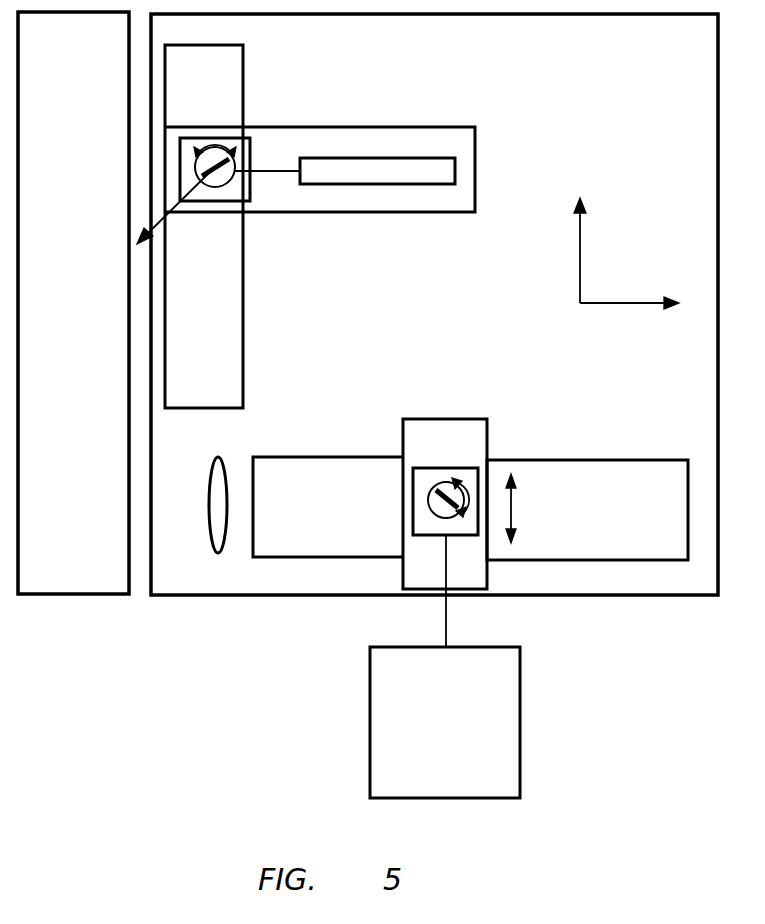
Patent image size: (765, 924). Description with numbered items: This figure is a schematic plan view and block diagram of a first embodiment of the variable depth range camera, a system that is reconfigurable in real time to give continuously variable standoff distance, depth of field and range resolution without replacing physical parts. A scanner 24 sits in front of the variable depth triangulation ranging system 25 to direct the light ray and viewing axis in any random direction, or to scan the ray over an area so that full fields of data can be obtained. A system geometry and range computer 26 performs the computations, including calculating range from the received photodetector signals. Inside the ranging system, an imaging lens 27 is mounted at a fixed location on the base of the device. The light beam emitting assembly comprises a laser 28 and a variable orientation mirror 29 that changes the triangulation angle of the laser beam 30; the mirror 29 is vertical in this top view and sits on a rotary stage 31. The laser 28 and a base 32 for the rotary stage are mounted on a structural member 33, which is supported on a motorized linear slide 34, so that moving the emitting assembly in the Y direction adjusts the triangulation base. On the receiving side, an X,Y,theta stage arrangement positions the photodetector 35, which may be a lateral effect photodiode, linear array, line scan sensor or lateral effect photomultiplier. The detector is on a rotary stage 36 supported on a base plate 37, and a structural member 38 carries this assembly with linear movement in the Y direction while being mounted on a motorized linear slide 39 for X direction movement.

The scanner 24 is at (43, 605).
The variable depth triangulation ranging system 25 is at (309, 612).
The system geometry and range computer 26 is at (520, 740).
The imaging lens 27 is at (210, 524).
The laser 28 is at (422, 158).
The variable orientation mirror 29 is at (200, 170).
The laser beam 30 is at (278, 170).
The rotary stage 31 is at (250, 205).
The base 32 is at (251, 148).
The structural member 33 is at (382, 127).
The motorized linear slide 34 is at (243, 376).
The photodetector 35 is at (430, 506).
The rotary stage 36 is at (453, 530).
The base plate 37 is at (435, 468).
The structural member 38 is at (403, 437).
The motorized linear slide 39 is at (581, 460).